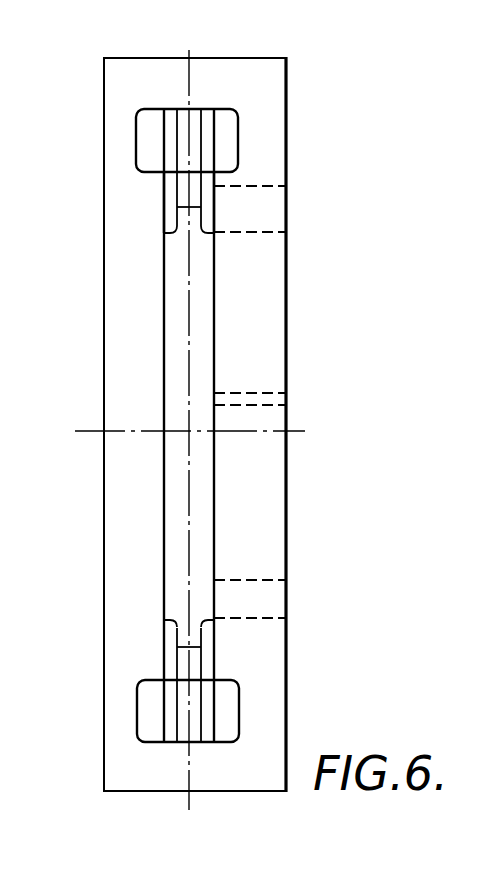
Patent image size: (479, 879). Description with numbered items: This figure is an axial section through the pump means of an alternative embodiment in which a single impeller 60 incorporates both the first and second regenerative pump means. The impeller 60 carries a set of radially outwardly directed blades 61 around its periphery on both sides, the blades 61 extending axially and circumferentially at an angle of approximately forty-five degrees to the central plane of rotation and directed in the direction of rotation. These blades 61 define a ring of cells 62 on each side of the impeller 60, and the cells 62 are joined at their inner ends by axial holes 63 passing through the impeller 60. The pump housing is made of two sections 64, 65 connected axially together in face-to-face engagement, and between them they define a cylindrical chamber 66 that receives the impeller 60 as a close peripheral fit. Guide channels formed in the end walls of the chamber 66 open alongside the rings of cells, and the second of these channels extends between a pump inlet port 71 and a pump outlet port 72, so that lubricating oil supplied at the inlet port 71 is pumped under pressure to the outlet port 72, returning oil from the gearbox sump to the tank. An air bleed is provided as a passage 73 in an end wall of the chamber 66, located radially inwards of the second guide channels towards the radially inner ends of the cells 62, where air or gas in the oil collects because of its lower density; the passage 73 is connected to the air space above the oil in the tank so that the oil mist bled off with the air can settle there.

The impeller 60 is at (198, 362).
The blades 61 is at (168, 138).
The cells 62 is at (213, 181).
The axial holes 63 is at (192, 217).
The housing section 64 is at (249, 67).
The housing section 65 is at (140, 68).
The cylindrical chamber 66 is at (205, 740).
The pump inlet port 71 is at (265, 222).
The pump outlet port 72 is at (257, 602).
The passage 73 is at (238, 393).